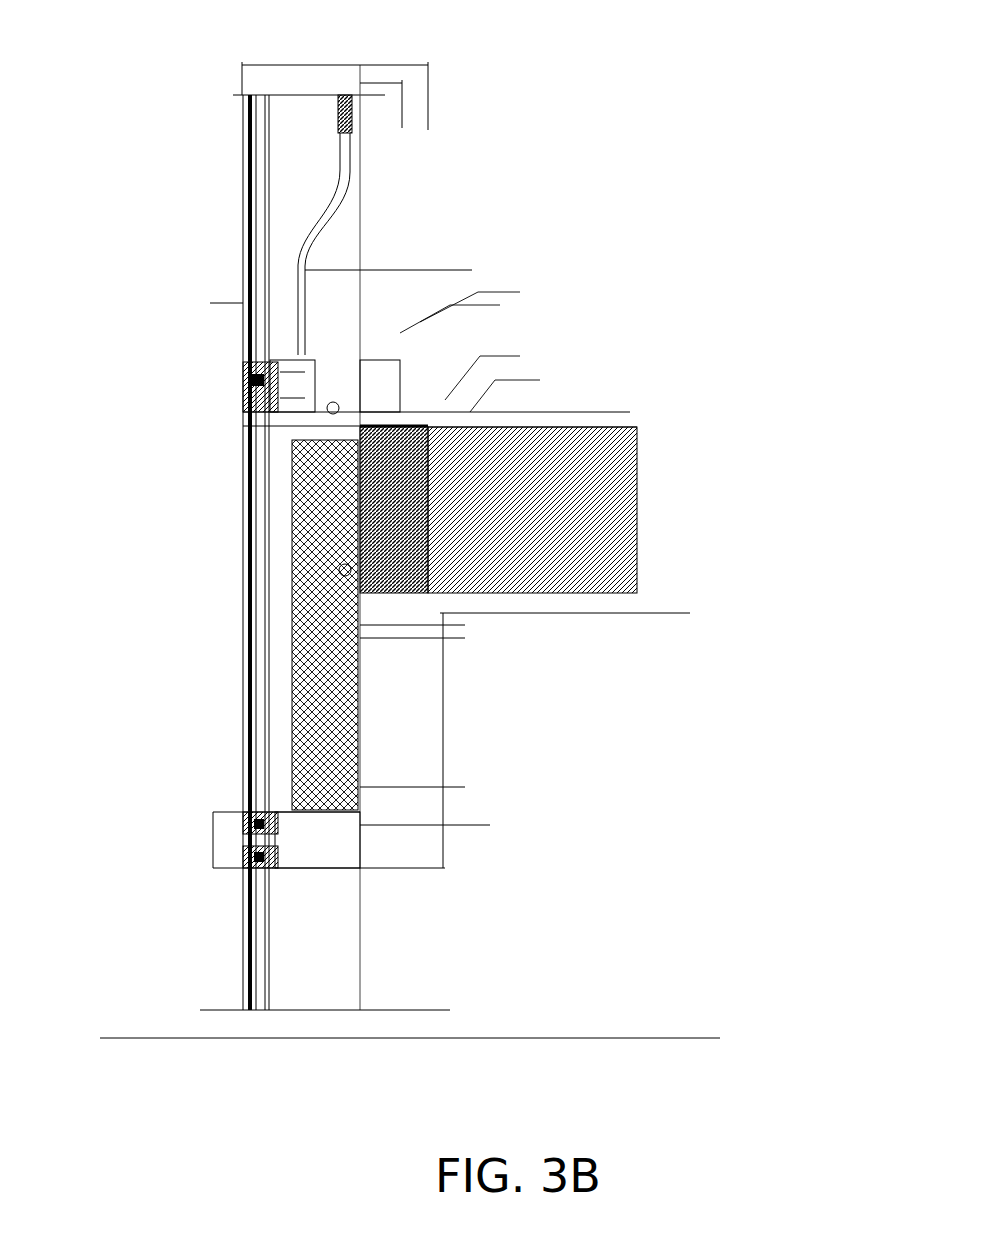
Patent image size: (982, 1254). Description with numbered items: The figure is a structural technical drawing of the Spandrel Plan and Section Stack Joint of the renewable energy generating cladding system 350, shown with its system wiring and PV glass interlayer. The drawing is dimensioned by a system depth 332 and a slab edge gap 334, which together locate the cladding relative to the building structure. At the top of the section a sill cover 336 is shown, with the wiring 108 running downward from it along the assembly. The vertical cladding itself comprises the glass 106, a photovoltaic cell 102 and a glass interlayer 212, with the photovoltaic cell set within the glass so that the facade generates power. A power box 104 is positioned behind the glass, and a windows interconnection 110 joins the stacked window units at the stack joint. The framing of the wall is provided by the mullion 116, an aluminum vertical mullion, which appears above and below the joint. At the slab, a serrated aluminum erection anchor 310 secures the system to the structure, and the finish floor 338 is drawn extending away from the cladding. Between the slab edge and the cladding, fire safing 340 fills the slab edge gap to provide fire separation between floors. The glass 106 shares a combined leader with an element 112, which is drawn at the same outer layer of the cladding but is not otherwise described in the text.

The system 350 is at (132, 123).
The system depth 332 is at (301, 68).
The slab edge gap 334 is at (394, 85).
The sill cover 336 is at (375, 83).
The wiring 108 is at (340, 192).
The mullion 116 is at (362, 400).
The serrated aluminum erection anchor 310 is at (457, 458).
The windows interconnection 110 is at (305, 428).
The finish floor 338 is at (564, 522).
The fire safing 340 is at (412, 592).
The photovoltaic cell 102 is at (248, 677).
The power box 104 is at (300, 668).
The glass 106 is at (243, 725).
The mullion 112 is at (267, 552).
The glass interlayer 212 is at (268, 790).